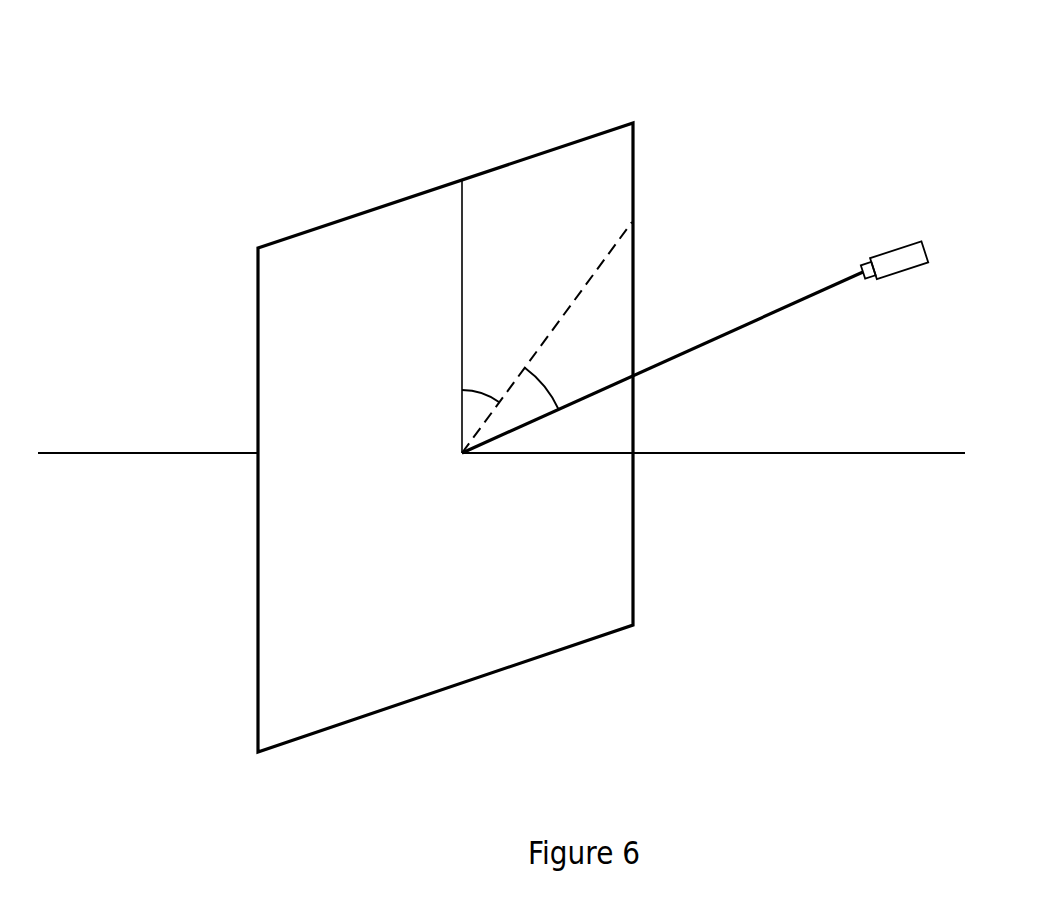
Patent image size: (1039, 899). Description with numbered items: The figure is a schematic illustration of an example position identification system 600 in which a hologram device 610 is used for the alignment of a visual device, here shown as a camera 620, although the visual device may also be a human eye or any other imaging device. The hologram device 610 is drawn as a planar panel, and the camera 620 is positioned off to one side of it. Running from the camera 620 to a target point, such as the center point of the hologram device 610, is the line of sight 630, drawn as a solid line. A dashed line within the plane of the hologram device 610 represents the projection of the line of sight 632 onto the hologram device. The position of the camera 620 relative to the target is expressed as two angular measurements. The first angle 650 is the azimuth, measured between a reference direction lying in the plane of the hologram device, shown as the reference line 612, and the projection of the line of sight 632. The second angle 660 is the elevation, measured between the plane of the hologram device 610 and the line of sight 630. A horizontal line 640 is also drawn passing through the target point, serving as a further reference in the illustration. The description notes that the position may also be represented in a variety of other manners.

The position identification system 600 is at (862, 123).
The hologram device 610 is at (603, 593).
The reference line 612 is at (460, 250).
The camera 620 is at (903, 242).
The line of sight 630 is at (755, 325).
The projection of the line of sight 632 is at (598, 270).
The horizontal reference axis 640 is at (823, 455).
The first angle 650 is at (478, 388).
The second angle 660 is at (560, 388).